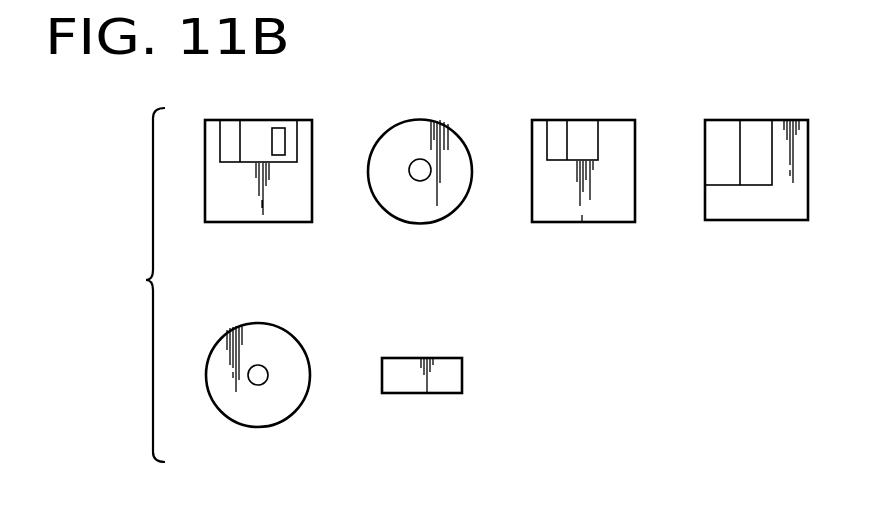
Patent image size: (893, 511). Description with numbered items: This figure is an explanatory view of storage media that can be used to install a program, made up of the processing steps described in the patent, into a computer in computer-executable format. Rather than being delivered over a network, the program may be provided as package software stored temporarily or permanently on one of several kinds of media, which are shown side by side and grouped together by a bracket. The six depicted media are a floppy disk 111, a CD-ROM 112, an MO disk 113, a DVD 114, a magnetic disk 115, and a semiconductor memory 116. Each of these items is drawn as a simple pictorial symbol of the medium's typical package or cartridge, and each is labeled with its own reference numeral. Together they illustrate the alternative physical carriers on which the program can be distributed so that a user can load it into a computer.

The floppy disk 111 is at (250, 222).
The CD-ROM 112 is at (420, 223).
The MO disk 113 is at (580, 222).
The DVD 114 is at (752, 220).
The magnetic disk 115 is at (258, 427).
The semiconductor memory 116 is at (422, 393).